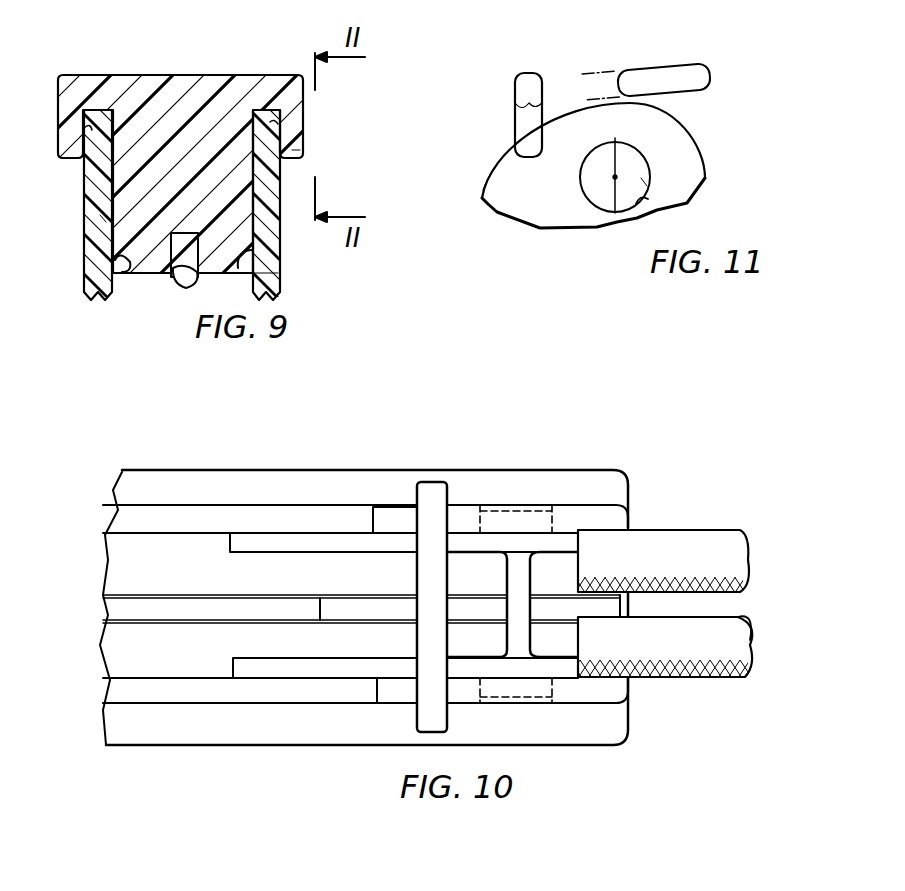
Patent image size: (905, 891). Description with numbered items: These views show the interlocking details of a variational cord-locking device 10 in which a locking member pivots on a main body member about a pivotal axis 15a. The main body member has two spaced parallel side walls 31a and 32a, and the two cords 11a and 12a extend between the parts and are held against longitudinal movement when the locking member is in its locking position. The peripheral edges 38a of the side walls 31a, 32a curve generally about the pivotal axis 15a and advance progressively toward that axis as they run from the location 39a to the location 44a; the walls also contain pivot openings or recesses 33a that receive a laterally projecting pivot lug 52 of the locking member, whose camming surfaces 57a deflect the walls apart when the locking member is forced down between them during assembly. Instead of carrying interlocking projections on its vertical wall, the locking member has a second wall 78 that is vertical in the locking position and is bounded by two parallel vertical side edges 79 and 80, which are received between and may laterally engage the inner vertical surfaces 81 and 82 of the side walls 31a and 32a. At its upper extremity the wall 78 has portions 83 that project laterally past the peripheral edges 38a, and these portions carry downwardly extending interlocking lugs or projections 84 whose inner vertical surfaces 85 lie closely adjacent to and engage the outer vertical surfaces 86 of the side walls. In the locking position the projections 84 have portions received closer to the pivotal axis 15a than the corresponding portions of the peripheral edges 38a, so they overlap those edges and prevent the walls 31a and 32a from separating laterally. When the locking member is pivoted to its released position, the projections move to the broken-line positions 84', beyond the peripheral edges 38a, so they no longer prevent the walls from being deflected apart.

In FIG. 9, the second wall 78 is at (182, 82).
In FIG. 10, the second wall 78 is at (416, 573).
In FIG. 9, the laterally projecting portions 83 is at (93, 80).
In FIG. 9, the inner vertical surfaces 85 is at (88, 130).
In FIG. 9, the interlocking lugs or projections 84 is at (322, 145).
In FIG. 11, the interlocking lugs or projections 84 is at (527, 97).
In FIG. 11, the released position of interlocking projections 84' is at (646, 60).
In FIG. 9, the outer vertical surfaces 86 is at (85, 173).
In FIG. 9, the vertical side edge 79 is at (102, 222).
In FIG. 9, the side wall 31a is at (95, 253).
In FIG. 10, the side wall 31a is at (577, 510).
In FIG. 9, the side wall 32a is at (273, 192).
In FIG. 10, the side wall 32a is at (593, 691).
In FIG. 9, the vertical side edge 80 is at (247, 252).
In FIG. 9, the inner vertical surface 81 is at (125, 275).
In FIG. 9, the inner vertical surface 82 is at (268, 273).
In FIG. 10, the connector assembly 10 is at (423, 462).
In FIG. 10, the cord 11a is at (684, 540).
In FIG. 10, the cord 12a is at (695, 678).
In FIG. 11, the location on peripheral edge 44a is at (647, 113).
In FIG. 11, the location on peripheral edge 39a is at (492, 195).
In FIG. 11, the peripheral edges 38a is at (503, 148).
In FIG. 11, the aperture 52 is at (600, 193).
In FIG. 11, the pivotal axis 15a is at (615, 177).
In FIG. 11, the camming surfaces 57a is at (643, 182).
In FIG. 11, the pivot openings or recesses 33a is at (647, 217).